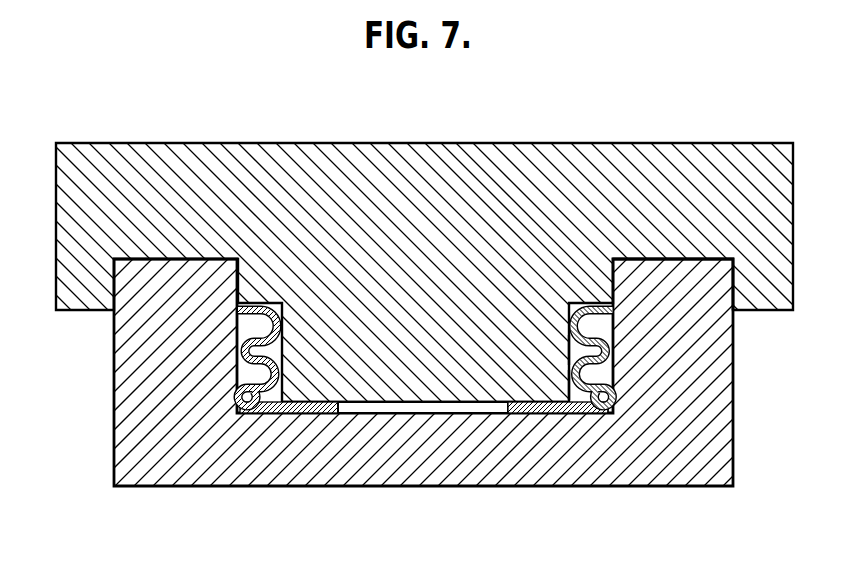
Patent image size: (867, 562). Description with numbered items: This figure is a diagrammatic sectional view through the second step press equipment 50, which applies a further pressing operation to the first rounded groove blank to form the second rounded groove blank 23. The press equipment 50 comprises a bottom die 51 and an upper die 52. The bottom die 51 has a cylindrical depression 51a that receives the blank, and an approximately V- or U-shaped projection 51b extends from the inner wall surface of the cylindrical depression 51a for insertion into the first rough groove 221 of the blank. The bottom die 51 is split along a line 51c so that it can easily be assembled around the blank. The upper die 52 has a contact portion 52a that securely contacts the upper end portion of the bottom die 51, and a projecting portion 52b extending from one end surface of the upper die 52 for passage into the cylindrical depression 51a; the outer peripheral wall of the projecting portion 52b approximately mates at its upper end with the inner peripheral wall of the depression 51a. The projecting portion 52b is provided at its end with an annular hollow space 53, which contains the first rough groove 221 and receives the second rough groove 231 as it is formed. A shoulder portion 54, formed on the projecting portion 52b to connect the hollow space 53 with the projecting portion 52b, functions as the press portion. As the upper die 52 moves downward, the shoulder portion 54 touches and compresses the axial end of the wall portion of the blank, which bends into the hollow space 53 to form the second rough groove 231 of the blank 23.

The second step press equipment 50 is at (433, 298).
The upper die 52 is at (518, 122).
The contact portion 52a is at (697, 260).
The projecting portion 52b is at (410, 385).
The bottom die 51 is at (750, 466).
The cylindrical depression 51a is at (541, 413).
The V- or U-shaped projection 51b is at (257, 400).
The split line 51c is at (428, 423).
The annular hollow space 53 is at (577, 415).
The second rounded groove blank 23 is at (222, 352).
The shoulder portion 54 is at (588, 302).
The second rough groove 231 is at (598, 340).
The first rough groove 221 is at (600, 383).